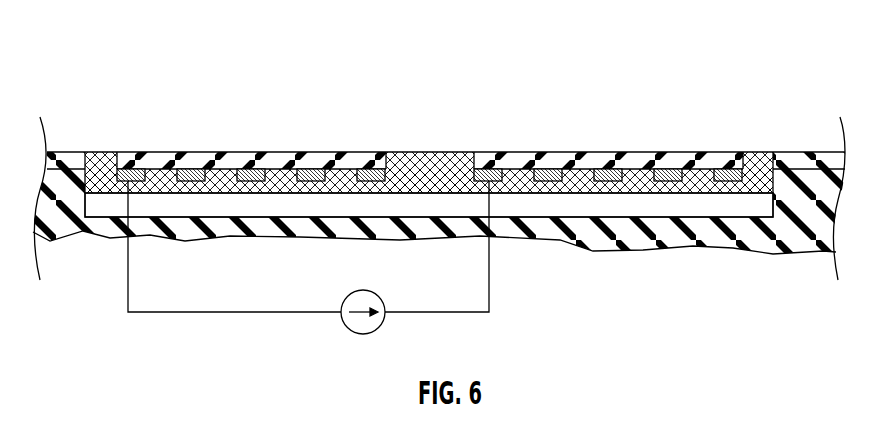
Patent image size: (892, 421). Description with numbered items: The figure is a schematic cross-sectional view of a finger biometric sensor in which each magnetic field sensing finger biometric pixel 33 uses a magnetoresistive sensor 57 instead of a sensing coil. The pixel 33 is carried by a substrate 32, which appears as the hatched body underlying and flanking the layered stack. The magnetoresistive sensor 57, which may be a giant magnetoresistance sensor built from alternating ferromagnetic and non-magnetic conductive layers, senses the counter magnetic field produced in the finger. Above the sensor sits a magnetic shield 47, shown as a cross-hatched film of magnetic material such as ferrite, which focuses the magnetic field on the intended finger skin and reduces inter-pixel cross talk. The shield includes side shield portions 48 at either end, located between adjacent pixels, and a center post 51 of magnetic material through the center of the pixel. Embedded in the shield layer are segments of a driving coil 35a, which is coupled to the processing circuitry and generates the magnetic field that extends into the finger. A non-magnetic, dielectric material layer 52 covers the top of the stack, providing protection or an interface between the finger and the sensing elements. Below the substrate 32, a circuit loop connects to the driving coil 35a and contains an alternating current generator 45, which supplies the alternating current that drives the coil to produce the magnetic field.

The magnetic field sensing finger biometric pixel 33 is at (234, 95).
The substrate 32 is at (683, 232).
The non-magnetic, dielectric material layer 52 is at (66, 160).
The magnetic shield 47 is at (429, 235).
The driving coil 35a is at (730, 183).
The side shield portion 48 is at (104, 165).
The center post 51 is at (428, 163).
The magnetoresistive sensor 57 is at (655, 207).
The alternating current generator 45 is at (352, 329).